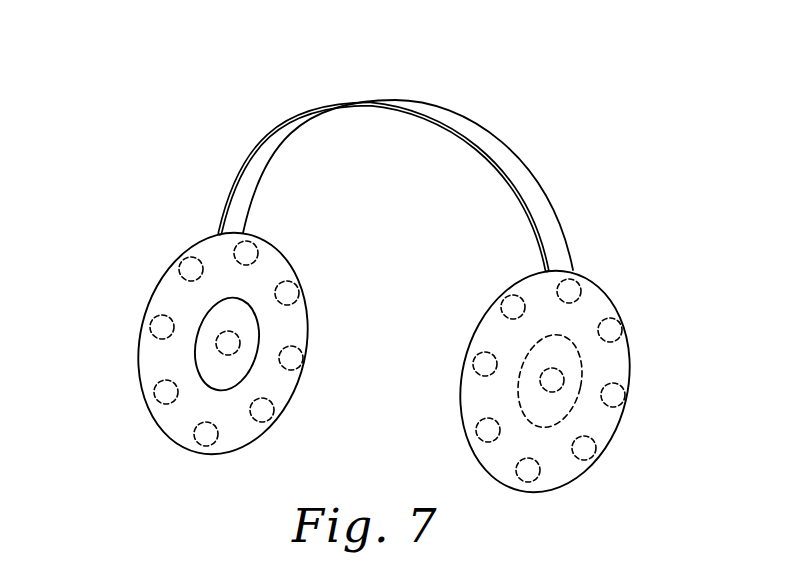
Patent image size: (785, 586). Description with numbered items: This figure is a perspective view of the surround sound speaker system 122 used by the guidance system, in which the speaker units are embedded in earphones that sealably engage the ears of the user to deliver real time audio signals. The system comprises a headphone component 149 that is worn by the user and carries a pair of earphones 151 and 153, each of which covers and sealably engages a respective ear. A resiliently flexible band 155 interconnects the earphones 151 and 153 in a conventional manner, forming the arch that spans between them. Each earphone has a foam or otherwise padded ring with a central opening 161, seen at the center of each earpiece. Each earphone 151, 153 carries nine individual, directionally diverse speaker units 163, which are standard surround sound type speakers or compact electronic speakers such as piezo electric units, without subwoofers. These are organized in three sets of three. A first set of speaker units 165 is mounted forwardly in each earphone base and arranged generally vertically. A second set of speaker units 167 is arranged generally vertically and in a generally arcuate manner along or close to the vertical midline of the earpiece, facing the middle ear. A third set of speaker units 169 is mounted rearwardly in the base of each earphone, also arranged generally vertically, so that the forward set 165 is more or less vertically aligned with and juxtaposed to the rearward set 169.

The surround sound speaker system 122 is at (186, 111).
The headphone component 149 is at (358, 101).
The resiliently flexible band 155 is at (443, 108).
The earphone 151 is at (613, 298).
The earphone 153 is at (300, 282).
The central opening 161 is at (202, 318).
The speaker units 163 is at (198, 434).
The first set of speaker units 165 is at (179, 260).
The second set of speaker units 167 is at (237, 246).
The third set of speaker units 169 is at (291, 282).